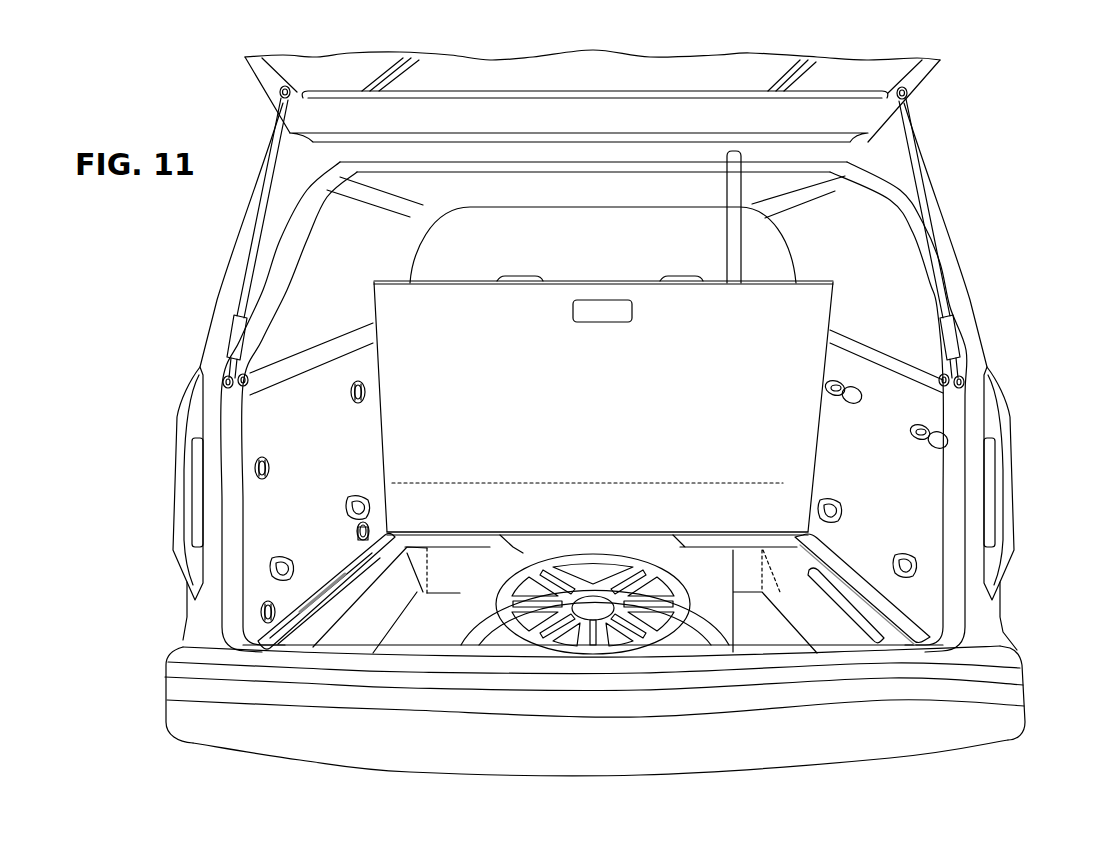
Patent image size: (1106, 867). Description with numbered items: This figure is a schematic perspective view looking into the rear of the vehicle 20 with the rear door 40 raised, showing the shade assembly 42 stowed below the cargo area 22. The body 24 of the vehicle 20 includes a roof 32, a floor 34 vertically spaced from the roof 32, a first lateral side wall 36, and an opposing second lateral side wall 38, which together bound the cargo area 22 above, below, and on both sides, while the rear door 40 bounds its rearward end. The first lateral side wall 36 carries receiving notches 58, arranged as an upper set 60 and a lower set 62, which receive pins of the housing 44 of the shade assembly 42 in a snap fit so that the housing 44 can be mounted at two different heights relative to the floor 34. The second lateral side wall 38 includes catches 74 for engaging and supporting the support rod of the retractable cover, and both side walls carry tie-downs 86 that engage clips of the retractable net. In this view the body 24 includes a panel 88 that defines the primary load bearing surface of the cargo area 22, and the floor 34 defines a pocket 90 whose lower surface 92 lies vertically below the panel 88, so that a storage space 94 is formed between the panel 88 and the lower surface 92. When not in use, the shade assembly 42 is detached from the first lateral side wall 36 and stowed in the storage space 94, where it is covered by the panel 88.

The vehicle 20 is at (953, 110).
The cargo area 22 is at (641, 250).
The body 24 is at (993, 620).
The roof 32 is at (590, 200).
The floor 34 is at (777, 633).
The first lateral side wall 36 is at (205, 355).
The second lateral side wall 38 is at (985, 348).
The rear door 40 is at (318, 118).
The shade assembly 42 is at (302, 632).
The housing 44 is at (322, 616).
The receiving notches 58 is at (358, 404).
The upper set of receiving notches 60 is at (345, 395).
The lower set of receiving notches 62 is at (358, 553).
The catch 74 is at (860, 393).
The tie-downs 86 is at (356, 497).
The panel 88 is at (800, 322).
The pocket 90 is at (383, 640).
The lower surface 92 is at (441, 643).
The storage space 94 is at (302, 637).